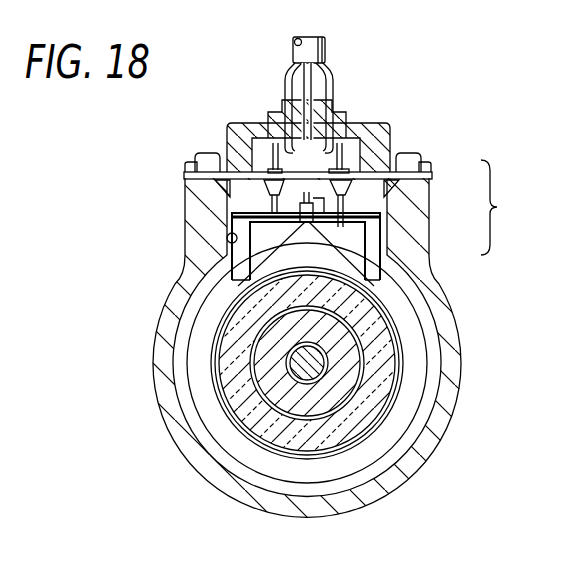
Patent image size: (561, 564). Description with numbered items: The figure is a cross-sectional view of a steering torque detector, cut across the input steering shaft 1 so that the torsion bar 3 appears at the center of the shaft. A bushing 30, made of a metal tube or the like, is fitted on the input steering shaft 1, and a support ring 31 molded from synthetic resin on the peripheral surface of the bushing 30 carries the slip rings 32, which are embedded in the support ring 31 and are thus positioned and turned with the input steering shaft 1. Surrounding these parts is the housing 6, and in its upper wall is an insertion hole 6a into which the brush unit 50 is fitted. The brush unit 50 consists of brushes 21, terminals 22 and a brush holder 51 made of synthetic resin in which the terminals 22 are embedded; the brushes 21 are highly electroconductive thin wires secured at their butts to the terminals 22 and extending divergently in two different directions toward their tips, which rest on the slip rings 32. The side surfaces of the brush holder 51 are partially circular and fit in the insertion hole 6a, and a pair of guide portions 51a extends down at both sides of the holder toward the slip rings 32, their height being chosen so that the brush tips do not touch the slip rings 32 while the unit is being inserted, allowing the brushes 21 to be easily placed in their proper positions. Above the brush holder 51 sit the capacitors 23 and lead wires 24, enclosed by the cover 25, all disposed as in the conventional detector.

The input steering shaft 1 is at (263, 363).
The torsion bar 3 is at (297, 371).
The housing 6 is at (170, 318).
The insertion hole 6a is at (227, 237).
The brushes 21 is at (387, 243).
The terminals 22 is at (367, 245).
The capacitors 23 is at (340, 167).
The lead wires 24 is at (328, 82).
The cover 25 is at (240, 123).
The bushing 30 is at (350, 438).
The support ring 31 is at (380, 383).
The slip rings 32 is at (388, 355).
The brush unit 50 is at (524, 222).
The brush holder 51 is at (415, 198).
The guide portions 51a is at (385, 218).